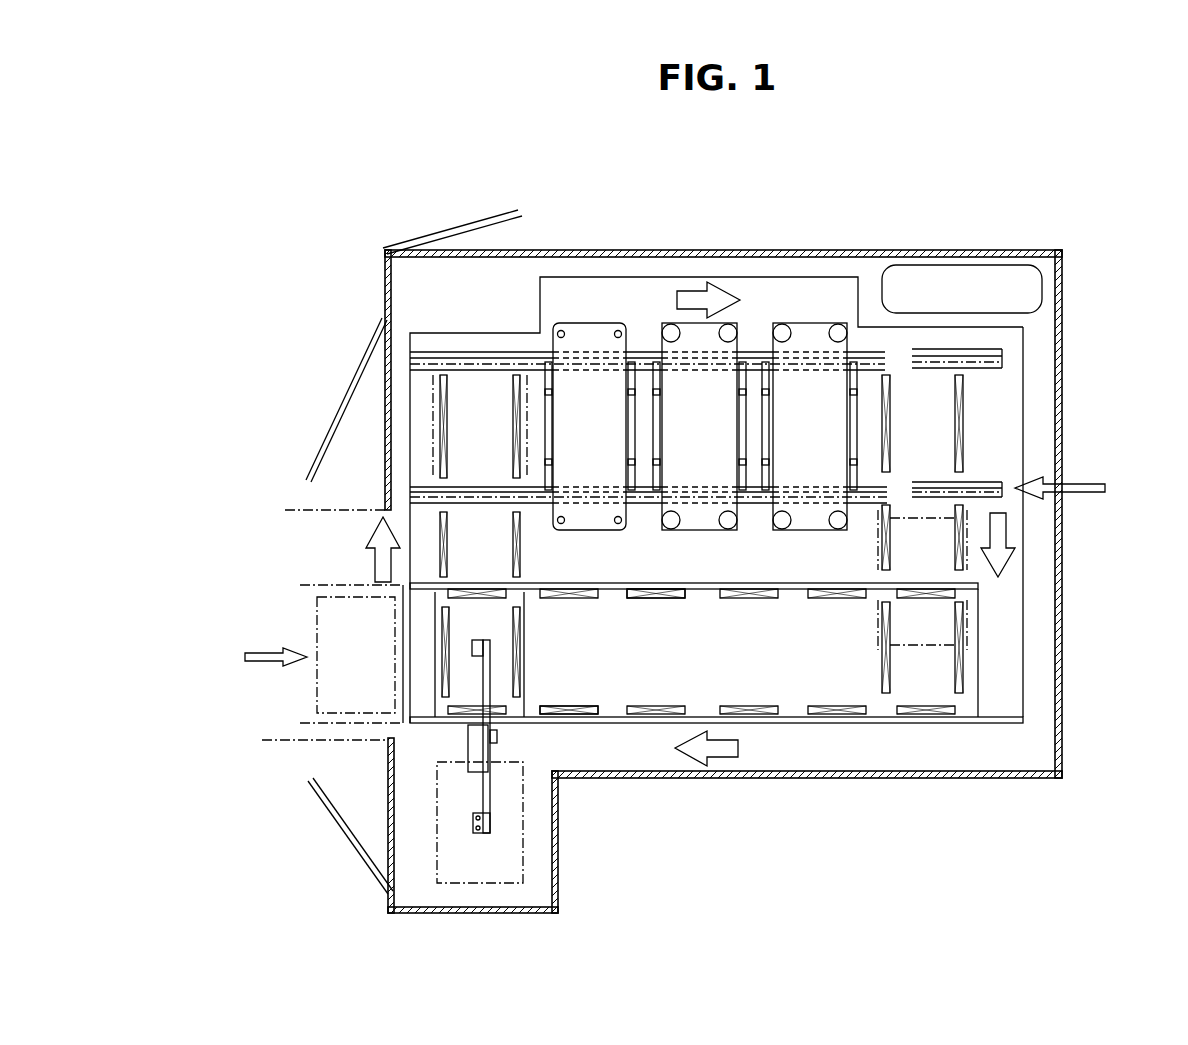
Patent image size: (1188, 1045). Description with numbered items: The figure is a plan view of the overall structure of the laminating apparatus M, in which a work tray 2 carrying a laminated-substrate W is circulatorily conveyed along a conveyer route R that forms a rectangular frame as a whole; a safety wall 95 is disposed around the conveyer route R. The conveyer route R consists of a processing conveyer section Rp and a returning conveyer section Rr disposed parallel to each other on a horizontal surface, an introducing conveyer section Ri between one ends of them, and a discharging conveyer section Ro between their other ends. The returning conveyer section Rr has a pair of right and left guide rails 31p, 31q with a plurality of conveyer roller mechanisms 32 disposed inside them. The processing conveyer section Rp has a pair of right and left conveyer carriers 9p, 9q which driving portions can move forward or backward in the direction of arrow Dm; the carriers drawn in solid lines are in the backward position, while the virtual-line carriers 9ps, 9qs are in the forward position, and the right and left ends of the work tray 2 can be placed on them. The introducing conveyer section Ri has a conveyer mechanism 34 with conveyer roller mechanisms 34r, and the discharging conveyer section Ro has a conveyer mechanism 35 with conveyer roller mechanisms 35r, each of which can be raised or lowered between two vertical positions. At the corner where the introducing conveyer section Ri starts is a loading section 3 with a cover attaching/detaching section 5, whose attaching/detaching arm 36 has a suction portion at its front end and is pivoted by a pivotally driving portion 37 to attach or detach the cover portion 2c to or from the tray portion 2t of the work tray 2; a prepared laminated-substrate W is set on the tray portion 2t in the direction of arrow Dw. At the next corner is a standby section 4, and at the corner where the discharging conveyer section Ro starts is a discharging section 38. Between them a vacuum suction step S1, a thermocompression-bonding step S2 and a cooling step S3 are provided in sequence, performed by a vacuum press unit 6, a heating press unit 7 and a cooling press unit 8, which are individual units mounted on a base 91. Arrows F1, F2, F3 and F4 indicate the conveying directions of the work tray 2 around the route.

The work tray 2 is at (466, 360).
The cover portion 2c is at (523, 878).
The tray portion 2t is at (548, 690).
The loading section 3 is at (508, 763).
The standby section 4 is at (423, 409).
The cover attaching/detaching section 5 is at (457, 740).
The vacuum press unit 6 is at (565, 320).
The heating press unit 7 is at (652, 317).
The cooling press unit 8 is at (793, 316).
The conveyer carrier 9p is at (430, 352).
The conveyer carrier 9q is at (430, 482).
The conveyer carrier in forward position 9ps is at (1000, 358).
The conveyer carrier in forward position 9qs is at (1003, 493).
The guide rail 31p is at (795, 590).
The guide rail 31q is at (790, 712).
The conveyer roller mechanisms 32 is at (653, 703).
The conveyer mechanism 34 is at (415, 536).
The conveyer roller mechanisms 34r is at (512, 447).
The conveyer mechanism 35 is at (921, 572).
The conveyer roller mechanisms 35r is at (955, 448).
The attaching/detaching arm 36 is at (493, 683).
The pivotally driving portion 37 is at (468, 752).
The discharging section 38 is at (985, 422).
The base 91 is at (1023, 333).
The safety wall 95 is at (1040, 778).
The conveying direction arrow Dm is at (1090, 474).
The setting direction arrow Dw is at (258, 652).
The conveying direction arrow F1 is at (375, 560).
The conveying direction arrow F2 is at (693, 290).
The conveying direction arrow F3 is at (1010, 558).
The conveying direction arrow F4 is at (710, 766).
The laminating apparatus M is at (970, 235).
The conveyer route R is at (932, 748).
The introducing conveyer section Ri is at (540, 552).
The discharging conveyer section Ro is at (968, 670).
The processing conveyer section Rp is at (848, 290).
The returning conveyer section Rr is at (787, 743).
The vacuum suction step S1 is at (586, 310).
The thermocompression-bonding step S2 is at (663, 302).
The cooling step S3 is at (813, 307).
The laminated-substrate W is at (317, 617).